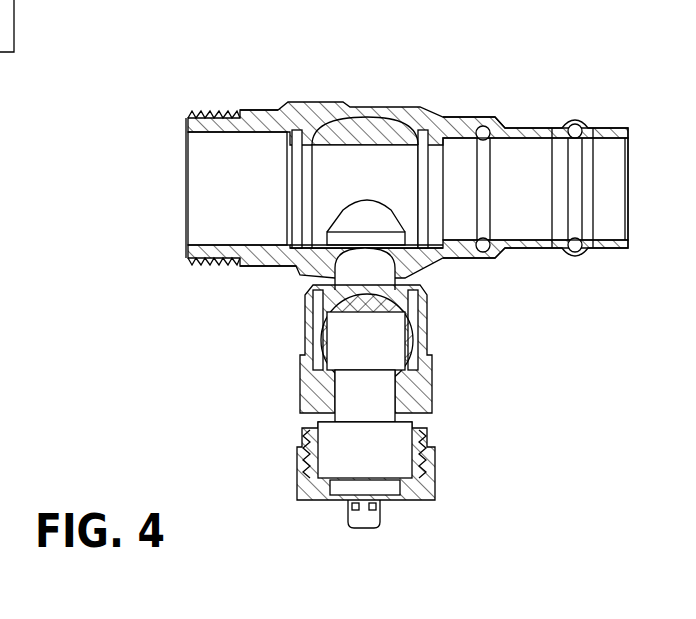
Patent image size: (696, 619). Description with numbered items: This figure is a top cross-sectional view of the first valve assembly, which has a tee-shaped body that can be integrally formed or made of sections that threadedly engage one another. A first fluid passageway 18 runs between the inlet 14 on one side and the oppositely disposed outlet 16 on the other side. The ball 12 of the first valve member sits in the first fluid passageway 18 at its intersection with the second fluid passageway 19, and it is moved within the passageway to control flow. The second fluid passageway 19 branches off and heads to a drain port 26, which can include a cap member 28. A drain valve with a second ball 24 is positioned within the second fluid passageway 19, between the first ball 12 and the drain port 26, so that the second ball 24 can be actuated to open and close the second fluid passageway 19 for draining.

The ball 12 is at (372, 130).
The inlet 14 is at (203, 117).
The outlet 16 is at (602, 130).
The first fluid passageway 18 is at (228, 193).
The second fluid passageway 19 is at (372, 277).
The second ball 24 is at (385, 308).
The drain port 26 is at (427, 450).
The cap member 28 is at (403, 498).